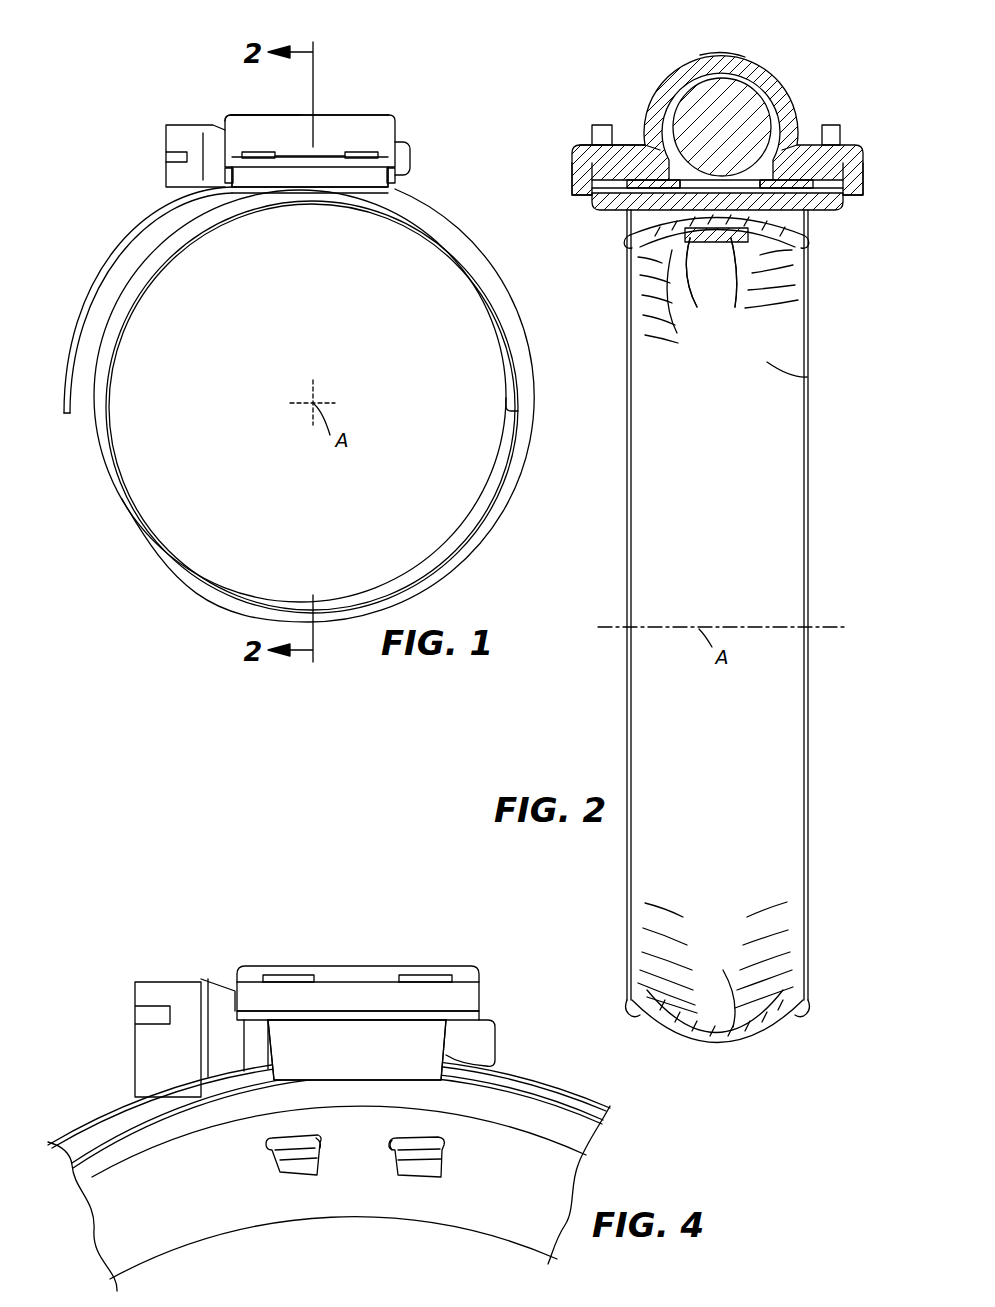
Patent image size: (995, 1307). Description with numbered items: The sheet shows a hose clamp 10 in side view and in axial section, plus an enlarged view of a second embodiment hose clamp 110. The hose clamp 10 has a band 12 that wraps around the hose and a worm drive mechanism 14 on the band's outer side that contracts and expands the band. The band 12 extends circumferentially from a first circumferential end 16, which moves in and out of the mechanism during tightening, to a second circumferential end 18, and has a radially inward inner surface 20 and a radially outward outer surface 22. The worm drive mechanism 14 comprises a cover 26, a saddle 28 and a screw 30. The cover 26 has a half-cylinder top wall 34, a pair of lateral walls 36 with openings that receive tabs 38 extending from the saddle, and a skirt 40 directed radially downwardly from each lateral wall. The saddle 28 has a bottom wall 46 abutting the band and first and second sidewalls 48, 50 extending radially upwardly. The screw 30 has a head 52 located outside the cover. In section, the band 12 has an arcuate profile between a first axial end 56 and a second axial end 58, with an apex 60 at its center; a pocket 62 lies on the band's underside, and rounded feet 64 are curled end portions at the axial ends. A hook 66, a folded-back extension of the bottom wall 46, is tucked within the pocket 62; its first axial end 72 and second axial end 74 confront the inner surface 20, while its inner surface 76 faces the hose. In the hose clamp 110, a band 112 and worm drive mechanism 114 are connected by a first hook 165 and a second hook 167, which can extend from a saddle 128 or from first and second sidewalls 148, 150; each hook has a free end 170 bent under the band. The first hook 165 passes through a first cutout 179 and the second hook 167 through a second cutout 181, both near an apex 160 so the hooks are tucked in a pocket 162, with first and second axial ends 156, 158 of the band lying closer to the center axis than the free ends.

In FIG. 1, the hose clamp 10 is at (99, 128).
In FIG. 2, the hose clamp 10 is at (833, 88).
In FIG. 1, the band 12 is at (292, 404).
In FIG. 2, the band 12 is at (726, 564).
In FIG. 1, the worm drive mechanism 14 is at (343, 156).
In FIG. 2, the worm drive mechanism 14 is at (699, 119).
In FIG. 1, the first circumferential end 16 is at (66, 418).
In FIG. 1, the second circumferential end 18 is at (506, 386).
In FIG. 1, the inner surface 20 is at (140, 510).
In FIG. 2, the inner surface 20 is at (807, 373).
In FIG. 1, the outer surface 22 is at (126, 513).
In FIG. 2, the outer surface 22 is at (753, 1030).
In FIG. 1, the cover 26 is at (336, 114).
In FIG. 2, the cover 26 is at (678, 68).
In FIG. 1, the saddle 28 is at (360, 193).
In FIG. 2, the saddle 28 is at (610, 205).
In FIG. 1, the screw 30 is at (181, 119).
In FIG. 2, the screw 30 is at (720, 120).
In FIG. 1, the top wall 34 is at (250, 124).
In FIG. 2, the top wall 34 is at (712, 68).
In FIG. 1, the lateral walls 36 is at (318, 154).
In FIG. 2, the lateral walls 36 is at (617, 150).
In FIG. 1, the tabs 38 is at (258, 152).
In FIG. 2, the tabs 38 is at (600, 133).
In FIG. 1, the skirt 40 is at (254, 176).
In FIG. 2, the skirt 40 is at (570, 188).
In FIG. 2, the bottom wall 46 is at (777, 203).
In FIG. 2, the first sidewall 48 is at (602, 175).
In FIG. 2, the second sidewall 50 is at (830, 173).
In FIG. 1, the head 52 is at (184, 134).
In FIG. 2, the first axial end 56 is at (638, 297).
In FIG. 2, the second axial end 58 is at (793, 328).
In FIG. 2, the apex 60 is at (742, 257).
In FIG. 2, the pocket 62 is at (711, 627).
In FIG. 2, the rounded feet 64 is at (638, 262).
In FIG. 2, the hook 66 is at (692, 312).
In FIG. 2, the first axial end 72 is at (682, 332).
In FIG. 2, the second axial end 74 is at (798, 243).
In FIG. 2, the inner surface 76 is at (793, 342).
In FIG. 4, the hose clamp 110 is at (96, 996).
In FIG. 4, the band 112 is at (325, 1174).
In FIG. 4, the worm drive mechanism 114 is at (390, 988).
In FIG. 4, the saddle 128 is at (446, 1055).
In FIG. 4, the first sidewall 148 is at (408, 1035).
In FIG. 4, the second sidewall 150 is at (357, 1050).
In FIG. 4, the first axial end 156 is at (550, 1115).
In FIG. 4, the second axial end 158 is at (490, 1235).
In FIG. 4, the apex 160 is at (325, 1174).
In FIG. 4, the pocket 162 is at (130, 1200).
In FIG. 4, the first hook 165 is at (280, 1153).
In FIG. 4, the second hook 167 is at (435, 1156).
In FIG. 4, the free end 170 is at (285, 1172).
In FIG. 4, the first cutout 179 is at (320, 1143).
In FIG. 4, the second cutout 181 is at (388, 1150).